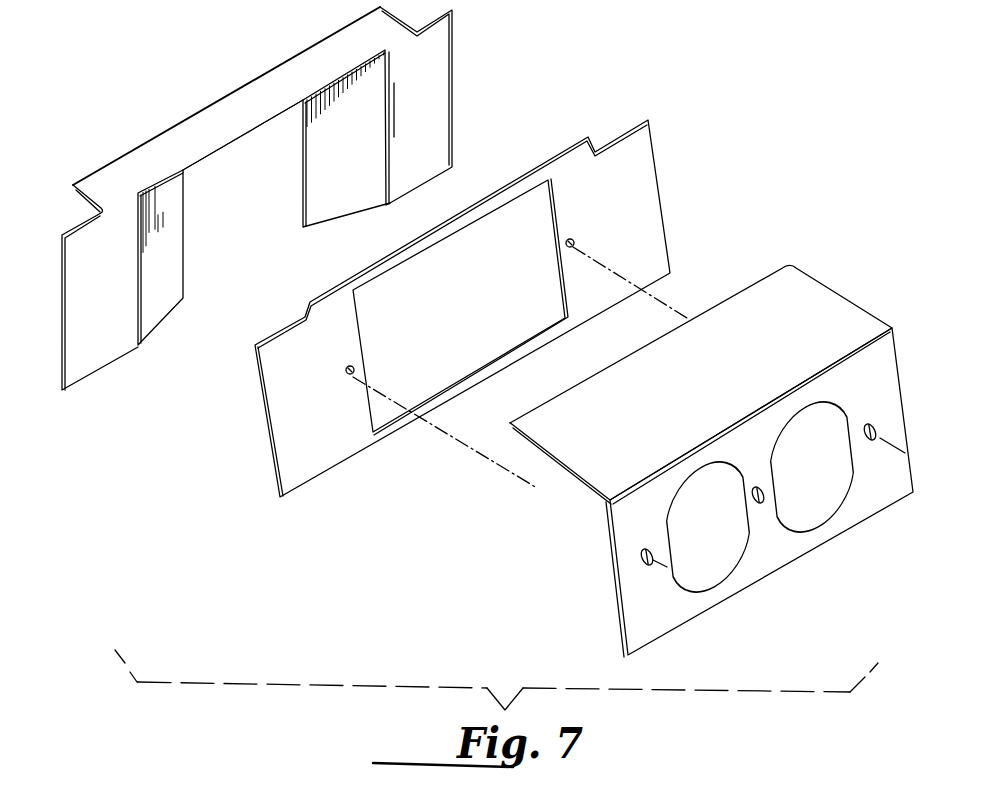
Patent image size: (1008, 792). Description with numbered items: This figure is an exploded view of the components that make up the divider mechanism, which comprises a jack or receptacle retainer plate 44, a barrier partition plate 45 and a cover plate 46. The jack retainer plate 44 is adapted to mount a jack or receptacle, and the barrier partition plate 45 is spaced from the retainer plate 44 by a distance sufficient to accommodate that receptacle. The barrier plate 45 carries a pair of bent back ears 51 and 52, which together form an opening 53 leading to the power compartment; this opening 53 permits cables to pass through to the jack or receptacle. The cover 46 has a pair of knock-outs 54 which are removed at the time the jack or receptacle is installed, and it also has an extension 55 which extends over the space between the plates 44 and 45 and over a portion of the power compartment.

The jack retainer plate 44 is at (308, 423).
The barrier partition plate 45 is at (257, 215).
The cover plate 46 is at (711, 468).
The bent back ear 51 is at (163, 300).
The bent back ear 52 is at (347, 183).
The opening 53 is at (265, 207).
The knock-outs 54 is at (802, 508).
The extension 55 is at (603, 445).